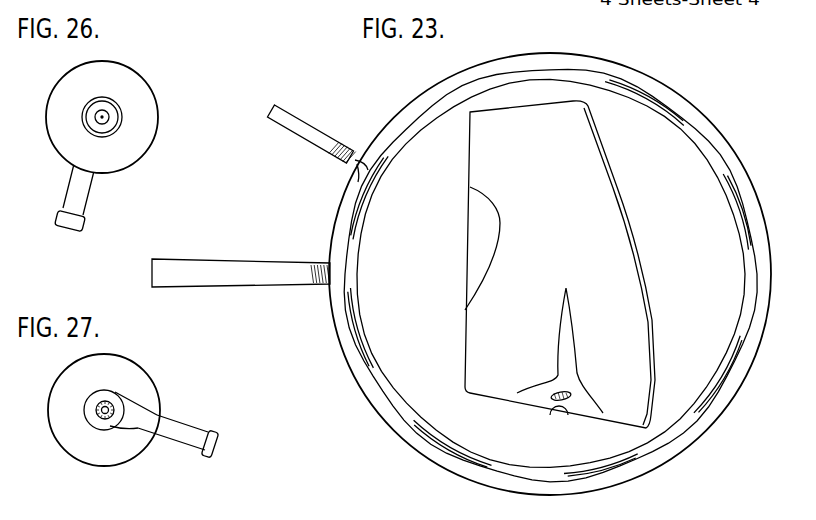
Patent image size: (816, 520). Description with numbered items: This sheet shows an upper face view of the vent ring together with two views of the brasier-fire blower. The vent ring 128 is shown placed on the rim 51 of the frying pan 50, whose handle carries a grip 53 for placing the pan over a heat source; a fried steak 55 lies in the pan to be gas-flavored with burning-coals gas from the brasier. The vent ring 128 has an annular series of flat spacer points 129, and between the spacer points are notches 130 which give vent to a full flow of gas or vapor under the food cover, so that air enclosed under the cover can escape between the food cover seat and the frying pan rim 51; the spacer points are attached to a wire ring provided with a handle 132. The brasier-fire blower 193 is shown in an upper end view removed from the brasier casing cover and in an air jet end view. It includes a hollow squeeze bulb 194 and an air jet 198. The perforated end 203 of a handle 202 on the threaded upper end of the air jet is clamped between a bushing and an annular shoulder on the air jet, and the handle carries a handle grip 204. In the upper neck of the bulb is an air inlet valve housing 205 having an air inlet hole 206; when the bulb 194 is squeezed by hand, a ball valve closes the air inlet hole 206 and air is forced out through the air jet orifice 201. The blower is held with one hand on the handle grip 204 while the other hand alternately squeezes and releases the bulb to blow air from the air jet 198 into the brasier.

In FIG. 23, the vent ring 128 is at (675, 87).
In FIG. 23, the flat spacer points 129 is at (710, 150).
In FIG. 23, the notches 130 is at (732, 385).
In FIG. 23, the frying pan 50 is at (522, 273).
In FIG. 23, the frying pan rim 51 is at (378, 176).
In FIG. 23, the fried steak 55 is at (630, 248).
In FIG. 23, the handle 132 is at (307, 118).
In FIG. 23, the grip 53 is at (240, 258).
In FIG. 26, the brasier-fire blower 193 is at (122, 98).
In FIG. 27, the brasier-fire blower 193 is at (104, 430).
In FIG. 26, the hollow squeeze bulb 194 is at (157, 97).
In FIG. 27, the hollow squeeze bulb 194 is at (129, 464).
In FIG. 27, the air jet 198 is at (105, 400).
In FIG. 27, the air jet orifice 201 is at (97, 417).
In FIG. 26, the handle 202 is at (90, 200).
In FIG. 27, the handle 202 is at (186, 450).
In FIG. 27, the perforated end 203 is at (115, 392).
In FIG. 26, the handle grip 204 is at (55, 215).
In FIG. 27, the handle grip 204 is at (212, 431).
In FIG. 26, the air inlet valve housing 205 is at (110, 128).
In FIG. 26, the air inlet hole 206 is at (107, 118).